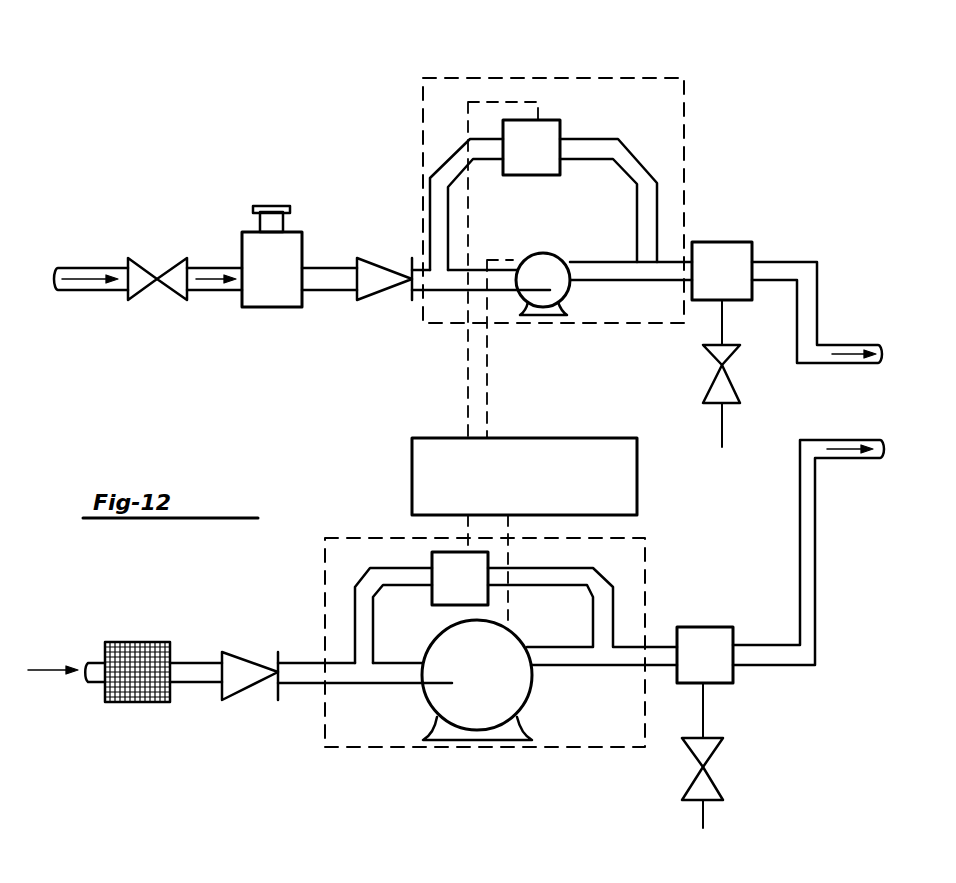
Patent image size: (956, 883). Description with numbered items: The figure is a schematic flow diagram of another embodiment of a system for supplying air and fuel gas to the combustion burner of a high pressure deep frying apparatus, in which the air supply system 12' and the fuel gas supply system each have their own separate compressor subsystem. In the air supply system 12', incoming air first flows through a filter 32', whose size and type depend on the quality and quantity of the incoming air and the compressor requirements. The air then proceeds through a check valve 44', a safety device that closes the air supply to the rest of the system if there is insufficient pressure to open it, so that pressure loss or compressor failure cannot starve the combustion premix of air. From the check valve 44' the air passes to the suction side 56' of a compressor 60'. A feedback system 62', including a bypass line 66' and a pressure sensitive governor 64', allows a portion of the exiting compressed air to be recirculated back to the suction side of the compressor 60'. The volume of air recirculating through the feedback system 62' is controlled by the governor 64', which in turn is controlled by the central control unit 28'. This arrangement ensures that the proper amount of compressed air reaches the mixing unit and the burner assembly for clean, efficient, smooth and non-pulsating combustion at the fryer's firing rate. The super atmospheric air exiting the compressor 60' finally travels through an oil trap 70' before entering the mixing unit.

The central control unit 28' is at (524, 476).
The air supply system 12' is at (456, 634).
The filter 32' is at (137, 710).
The check valve 44' is at (250, 716).
The suction side 56' is at (365, 730).
The compressor 60' is at (477, 718).
The feedback system 62' is at (487, 610).
The pressure sensitive governor 64' is at (378, 577).
The bypass line 66' is at (531, 602).
The oil trap 70' is at (731, 727).